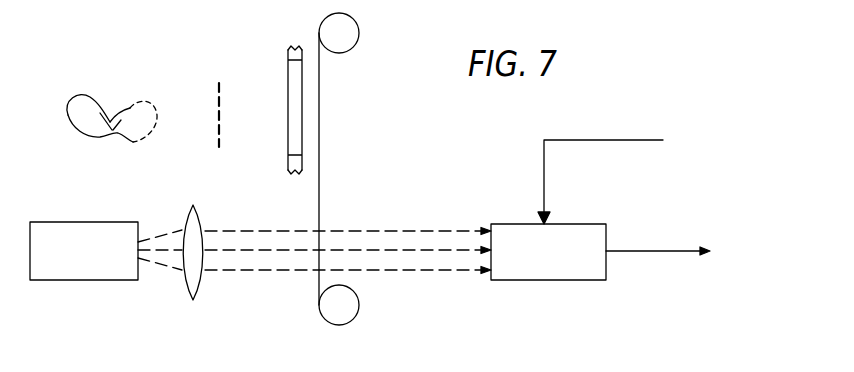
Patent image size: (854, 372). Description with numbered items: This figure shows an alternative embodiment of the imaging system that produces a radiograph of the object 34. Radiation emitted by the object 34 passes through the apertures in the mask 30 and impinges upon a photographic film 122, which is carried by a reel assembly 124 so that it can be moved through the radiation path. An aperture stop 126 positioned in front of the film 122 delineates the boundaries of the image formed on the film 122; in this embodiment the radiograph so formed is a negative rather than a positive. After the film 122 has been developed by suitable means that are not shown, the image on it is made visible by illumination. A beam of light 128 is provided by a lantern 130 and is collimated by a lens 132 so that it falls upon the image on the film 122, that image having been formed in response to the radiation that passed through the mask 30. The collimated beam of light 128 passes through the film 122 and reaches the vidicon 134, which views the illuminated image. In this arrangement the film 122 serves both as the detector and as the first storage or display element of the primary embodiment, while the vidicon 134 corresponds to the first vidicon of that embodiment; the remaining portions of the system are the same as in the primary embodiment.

The mask 30 is at (213, 125).
The object 34 is at (144, 103).
The photographic film 122 is at (320, 208).
The reel assembly 124 is at (352, 38).
The aperture stop 126 is at (288, 52).
The beam of light 128 is at (163, 262).
The lantern 130 is at (84, 222).
The lens 132 is at (196, 290).
The vidicon 134 is at (569, 275).